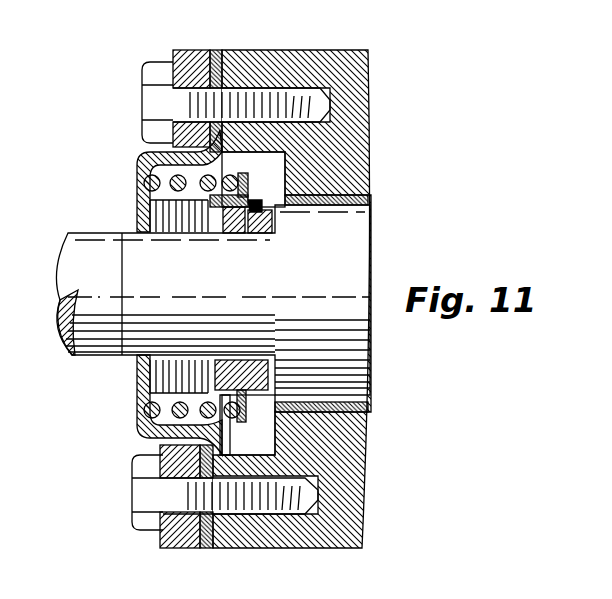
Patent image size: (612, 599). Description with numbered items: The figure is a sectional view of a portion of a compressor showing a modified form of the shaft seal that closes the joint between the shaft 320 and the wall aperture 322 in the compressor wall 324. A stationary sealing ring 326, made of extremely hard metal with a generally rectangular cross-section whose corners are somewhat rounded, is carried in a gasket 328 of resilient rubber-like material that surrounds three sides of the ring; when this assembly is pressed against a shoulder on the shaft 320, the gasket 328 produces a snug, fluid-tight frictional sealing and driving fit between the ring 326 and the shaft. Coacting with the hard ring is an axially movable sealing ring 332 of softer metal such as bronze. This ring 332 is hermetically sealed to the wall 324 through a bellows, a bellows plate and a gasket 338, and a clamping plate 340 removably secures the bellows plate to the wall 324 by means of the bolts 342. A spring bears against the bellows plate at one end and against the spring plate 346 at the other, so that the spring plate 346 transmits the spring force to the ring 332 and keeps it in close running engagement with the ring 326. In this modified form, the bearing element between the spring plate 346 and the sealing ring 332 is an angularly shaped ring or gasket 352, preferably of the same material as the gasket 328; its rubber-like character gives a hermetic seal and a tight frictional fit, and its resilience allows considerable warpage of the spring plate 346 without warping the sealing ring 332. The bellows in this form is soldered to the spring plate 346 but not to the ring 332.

The shaft 320 is at (357, 232).
The wall aperture 322 is at (370, 200).
The wall 324 is at (358, 100).
The stationary sealing ring 326 is at (263, 203).
The gasket 328 is at (358, 418).
The axially movable sealing ring 332 is at (250, 400).
The gasket 338 is at (232, 280).
The clamping plate 340 is at (187, 62).
The bolts 342 is at (155, 103).
The spring plate 346 is at (245, 178).
The angularly shaped ring or gasket 352 is at (226, 395).